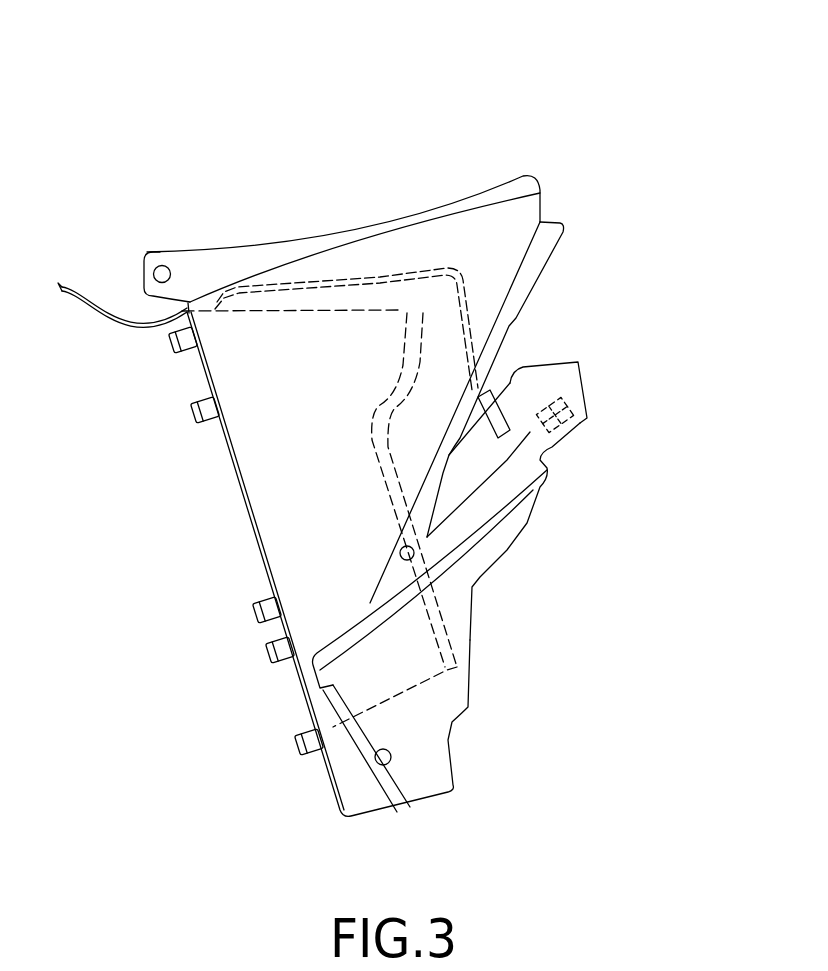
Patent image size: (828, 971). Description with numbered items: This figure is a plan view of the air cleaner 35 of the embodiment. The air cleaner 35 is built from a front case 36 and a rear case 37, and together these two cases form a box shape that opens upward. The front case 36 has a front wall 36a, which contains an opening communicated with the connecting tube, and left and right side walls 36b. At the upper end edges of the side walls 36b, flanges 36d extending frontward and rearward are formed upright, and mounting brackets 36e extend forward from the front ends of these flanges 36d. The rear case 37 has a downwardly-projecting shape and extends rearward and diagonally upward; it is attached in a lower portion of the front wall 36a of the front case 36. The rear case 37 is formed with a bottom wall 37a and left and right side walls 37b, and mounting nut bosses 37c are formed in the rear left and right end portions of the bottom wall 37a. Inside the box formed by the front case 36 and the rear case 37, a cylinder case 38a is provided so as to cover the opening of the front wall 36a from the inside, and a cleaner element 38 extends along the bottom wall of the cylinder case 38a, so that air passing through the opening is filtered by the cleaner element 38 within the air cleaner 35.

The air cleaner 35 is at (340, 155).
The front case 36 is at (212, 470).
The front wall 36a is at (272, 576).
The side walls 36b is at (310, 480).
The flanges 36d is at (308, 255).
The mounting brackets 36e is at (142, 270).
The rear case 37 is at (522, 578).
The bottom wall 37a is at (470, 640).
The side walls 37b is at (422, 708).
The mounting nut bosses 37c is at (540, 362).
The cleaner element 38 is at (397, 447).
The cylinder case 38a is at (358, 310).